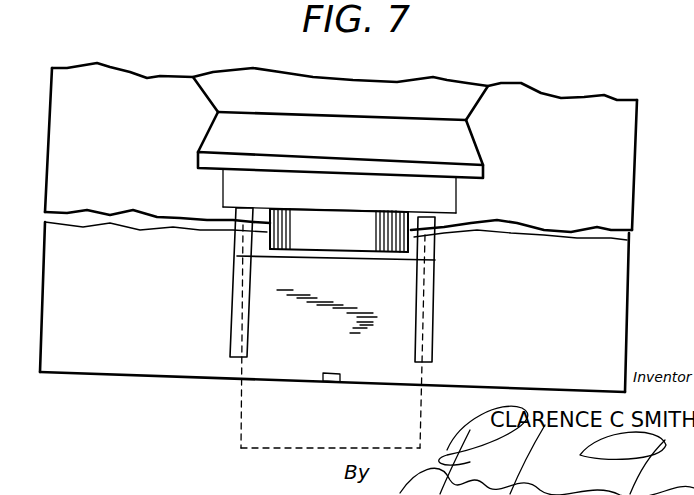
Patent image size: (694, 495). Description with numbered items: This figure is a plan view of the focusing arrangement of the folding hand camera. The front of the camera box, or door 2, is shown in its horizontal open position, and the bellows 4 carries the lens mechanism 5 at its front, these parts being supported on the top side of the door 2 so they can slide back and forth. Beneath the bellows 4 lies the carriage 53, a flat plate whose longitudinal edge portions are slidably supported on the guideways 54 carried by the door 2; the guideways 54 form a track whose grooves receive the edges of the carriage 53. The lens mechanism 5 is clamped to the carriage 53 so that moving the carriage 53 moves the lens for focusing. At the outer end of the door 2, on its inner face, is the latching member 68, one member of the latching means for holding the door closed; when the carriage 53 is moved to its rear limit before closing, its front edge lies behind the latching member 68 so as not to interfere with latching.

The front of the camera box 2 is at (614, 152).
The bellows 4 is at (447, 138).
The lens mechanism 5 is at (440, 246).
The carriage 53 is at (260, 247).
The guideways 54 is at (418, 280).
The latching member 68 is at (340, 382).